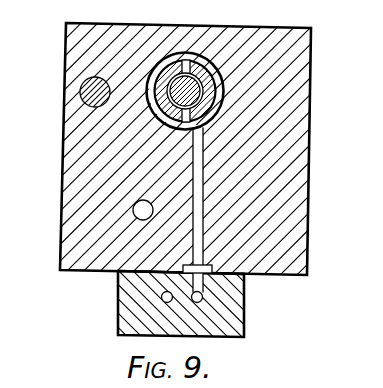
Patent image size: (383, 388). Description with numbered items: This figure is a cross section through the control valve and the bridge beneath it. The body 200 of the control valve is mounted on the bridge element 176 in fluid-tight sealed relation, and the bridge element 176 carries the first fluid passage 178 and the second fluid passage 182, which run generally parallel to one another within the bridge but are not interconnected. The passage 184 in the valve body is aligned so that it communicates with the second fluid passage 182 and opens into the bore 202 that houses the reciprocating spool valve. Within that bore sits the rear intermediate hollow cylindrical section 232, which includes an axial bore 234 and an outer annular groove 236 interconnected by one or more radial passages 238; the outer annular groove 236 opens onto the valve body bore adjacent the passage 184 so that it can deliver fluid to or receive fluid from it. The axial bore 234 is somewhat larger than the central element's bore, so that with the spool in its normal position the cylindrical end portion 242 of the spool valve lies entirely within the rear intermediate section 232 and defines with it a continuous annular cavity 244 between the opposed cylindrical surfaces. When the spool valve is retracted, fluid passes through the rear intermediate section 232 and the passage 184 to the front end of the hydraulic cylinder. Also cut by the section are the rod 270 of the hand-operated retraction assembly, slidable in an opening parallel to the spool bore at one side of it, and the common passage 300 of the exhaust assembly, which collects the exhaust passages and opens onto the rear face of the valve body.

The body 200 is at (299, 257).
The bridge element 176 is at (118, 321).
The first fluid passage 178 is at (161, 297).
The second fluid passage 182 is at (201, 299).
The passage 184 is at (203, 242).
The bore 202 is at (224, 118).
The rear intermediate hollow cylindrical section 232 is at (168, 60).
The axial bore 234 is at (207, 80).
The outer annular groove 236 is at (157, 68).
The radial passage 238 is at (187, 62).
The cylindrical end portion 242 is at (200, 93).
The continuous annular cavity 244 is at (213, 58).
The rod 270 is at (81, 91).
The common passage 300 is at (133, 211).